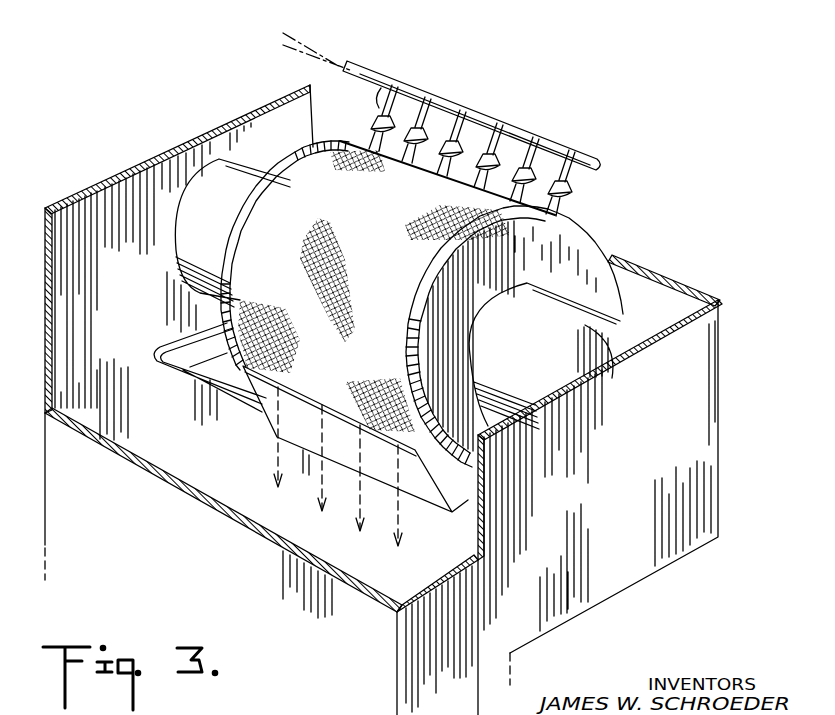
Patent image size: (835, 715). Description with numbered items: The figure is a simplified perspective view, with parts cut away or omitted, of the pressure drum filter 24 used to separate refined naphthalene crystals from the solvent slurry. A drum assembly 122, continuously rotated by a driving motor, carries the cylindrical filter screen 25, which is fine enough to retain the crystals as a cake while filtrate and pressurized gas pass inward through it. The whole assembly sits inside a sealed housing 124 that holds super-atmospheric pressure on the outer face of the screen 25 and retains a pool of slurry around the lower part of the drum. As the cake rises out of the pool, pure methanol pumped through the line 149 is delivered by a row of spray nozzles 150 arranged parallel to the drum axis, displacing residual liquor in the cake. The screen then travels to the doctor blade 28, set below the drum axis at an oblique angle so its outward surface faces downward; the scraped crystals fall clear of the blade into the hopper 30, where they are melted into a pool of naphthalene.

The filter 24 is at (700, 258).
The cylindrical filter screen 25 is at (305, 195).
The doctor blade 28 is at (263, 387).
The hopper 30 is at (395, 618).
The drum assembly 122 is at (572, 240).
The sealed housing 124 is at (685, 302).
The line 149 is at (356, 65).
The spray nozzles 150 is at (390, 85).